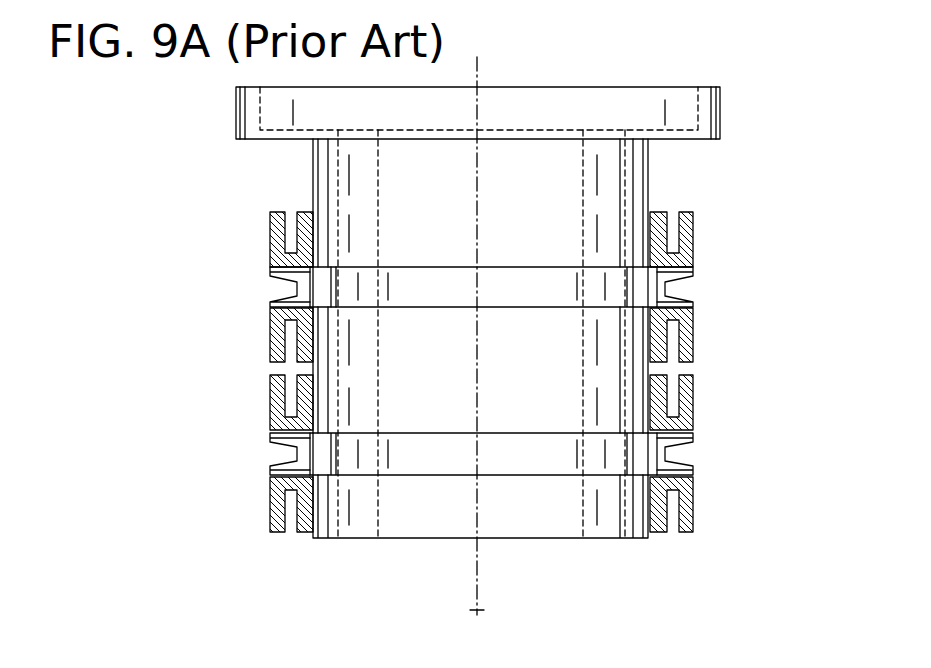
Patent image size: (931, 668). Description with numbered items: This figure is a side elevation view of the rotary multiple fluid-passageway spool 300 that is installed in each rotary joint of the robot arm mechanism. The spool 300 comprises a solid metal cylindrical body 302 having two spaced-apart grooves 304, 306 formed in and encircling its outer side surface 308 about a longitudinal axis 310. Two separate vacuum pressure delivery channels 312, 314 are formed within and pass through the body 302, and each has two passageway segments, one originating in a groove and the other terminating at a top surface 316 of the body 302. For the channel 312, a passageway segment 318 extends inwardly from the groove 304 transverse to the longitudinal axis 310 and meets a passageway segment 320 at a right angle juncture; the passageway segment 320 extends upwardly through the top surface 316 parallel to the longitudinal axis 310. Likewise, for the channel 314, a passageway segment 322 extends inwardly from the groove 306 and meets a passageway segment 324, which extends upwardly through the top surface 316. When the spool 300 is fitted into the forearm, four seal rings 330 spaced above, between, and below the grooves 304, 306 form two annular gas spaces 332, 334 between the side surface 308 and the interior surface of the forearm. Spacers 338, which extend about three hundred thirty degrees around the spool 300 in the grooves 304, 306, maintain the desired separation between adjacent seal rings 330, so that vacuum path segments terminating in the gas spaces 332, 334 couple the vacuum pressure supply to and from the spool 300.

The spool 300 is at (487, 349).
The cylindrical body 302 is at (650, 538).
The groove 304 is at (618, 289).
The groove 306 is at (550, 465).
The outer side surface 308 is at (650, 170).
The longitudinal axis 310 is at (487, 611).
The vacuum pressure delivery channel 312 is at (384, 205).
The vacuum pressure delivery channel 314 is at (576, 360).
The top surface 316 is at (498, 88).
The passageway segment 318 is at (337, 290).
The passageway segment 320 is at (352, 257).
The passageway segment 322 is at (284, 476).
The passageway segment 324 is at (586, 407).
The seal rings 330 is at (693, 228).
The annular gas space 332 is at (696, 289).
The annular gas space 334 is at (696, 453).
The spacers 338 is at (283, 273).